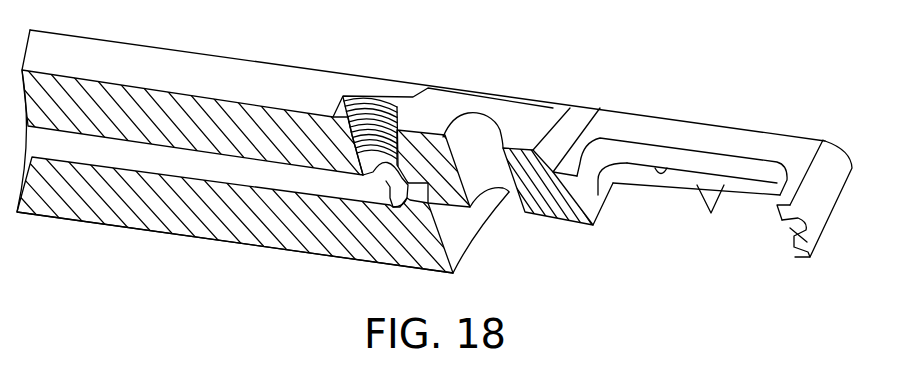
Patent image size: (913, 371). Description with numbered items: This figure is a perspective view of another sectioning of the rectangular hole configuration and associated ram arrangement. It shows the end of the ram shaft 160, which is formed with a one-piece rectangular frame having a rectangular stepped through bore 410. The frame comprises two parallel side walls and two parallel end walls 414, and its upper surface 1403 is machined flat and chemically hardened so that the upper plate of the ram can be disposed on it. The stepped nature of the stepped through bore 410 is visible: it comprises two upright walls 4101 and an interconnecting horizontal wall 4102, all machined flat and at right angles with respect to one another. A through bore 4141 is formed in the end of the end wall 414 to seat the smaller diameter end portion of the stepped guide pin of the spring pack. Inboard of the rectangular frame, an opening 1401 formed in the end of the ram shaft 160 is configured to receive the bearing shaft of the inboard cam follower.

The ram shaft 160 is at (260, 77).
The opening 1401 is at (478, 135).
The stepped through bore 410 is at (652, 222).
The upper surface 1403 is at (738, 140).
The end wall 414 is at (598, 197).
The through bore 4141 is at (800, 232).
The interconnecting horizontal wall 4102 is at (667, 170).
The upright wall 4101 is at (727, 168).